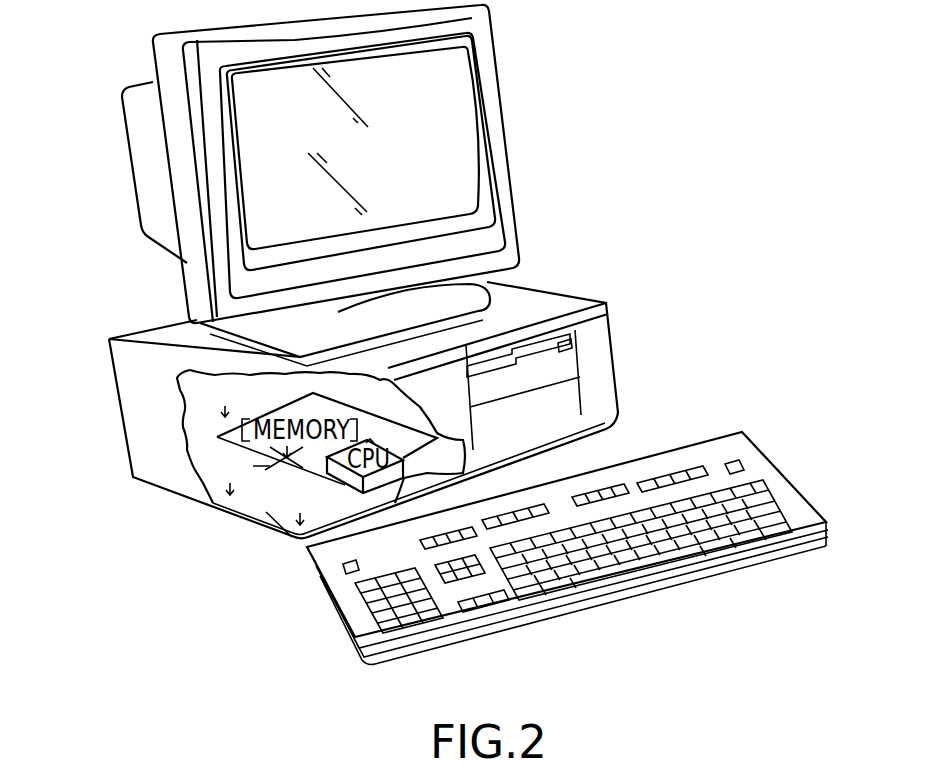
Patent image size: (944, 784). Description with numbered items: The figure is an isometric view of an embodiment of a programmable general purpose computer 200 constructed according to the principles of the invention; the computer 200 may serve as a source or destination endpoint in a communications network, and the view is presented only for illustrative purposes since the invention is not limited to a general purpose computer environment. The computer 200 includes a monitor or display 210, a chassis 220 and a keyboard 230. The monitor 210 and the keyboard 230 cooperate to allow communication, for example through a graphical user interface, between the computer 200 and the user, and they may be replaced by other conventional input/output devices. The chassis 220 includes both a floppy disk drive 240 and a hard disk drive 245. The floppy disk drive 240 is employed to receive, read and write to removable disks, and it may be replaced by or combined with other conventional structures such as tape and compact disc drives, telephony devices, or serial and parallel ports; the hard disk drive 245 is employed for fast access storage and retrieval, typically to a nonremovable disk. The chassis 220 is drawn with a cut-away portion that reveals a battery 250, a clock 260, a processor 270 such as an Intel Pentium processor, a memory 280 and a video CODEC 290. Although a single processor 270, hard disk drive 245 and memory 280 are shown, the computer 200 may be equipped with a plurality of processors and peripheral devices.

The programmable general purpose computer 200 is at (560, 224).
The monitor 210 is at (182, 269).
The chassis 220 is at (590, 304).
The keyboard 230 is at (742, 432).
The floppy disk drive 240 is at (570, 347).
The hard disk drive 245 is at (540, 377).
The battery 250 is at (286, 539).
The clock 260 is at (205, 484).
The processor 270 is at (473, 450).
The memory 280 is at (190, 430).
The video CODEC 290 is at (223, 377).